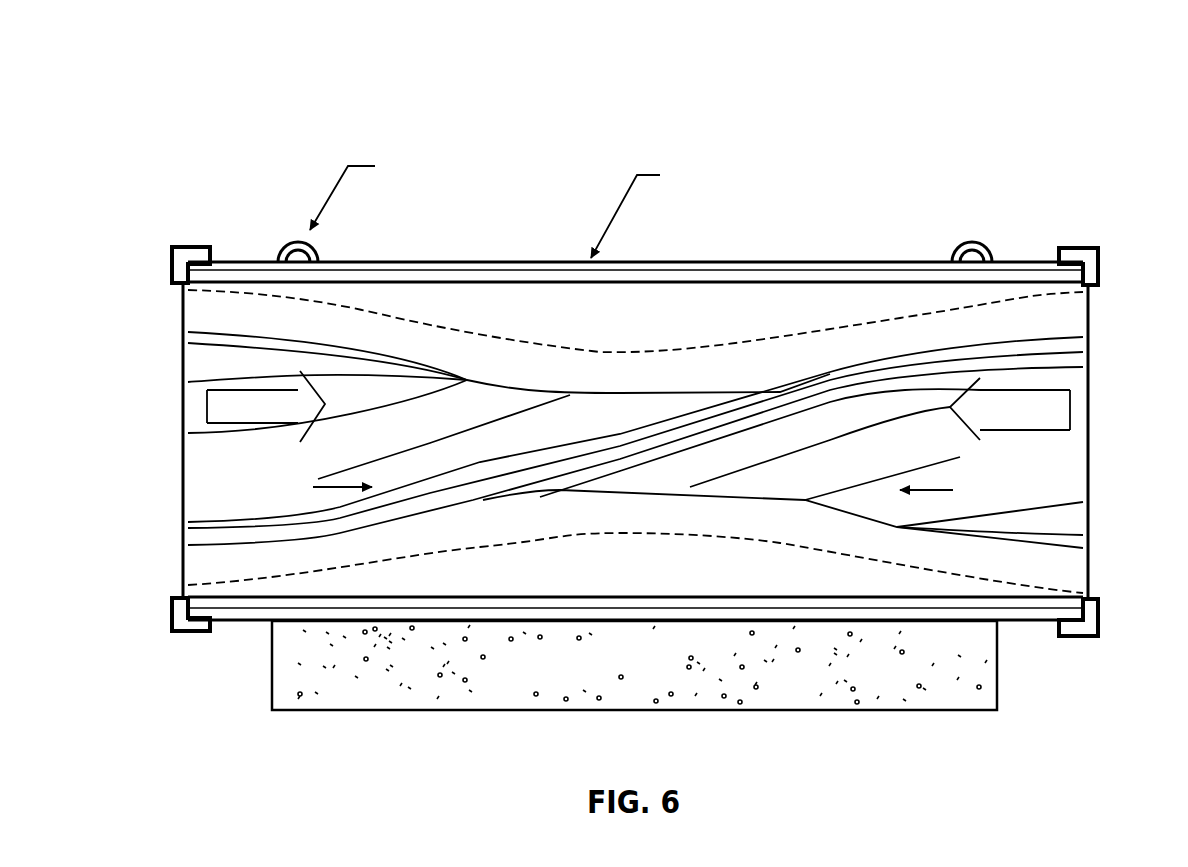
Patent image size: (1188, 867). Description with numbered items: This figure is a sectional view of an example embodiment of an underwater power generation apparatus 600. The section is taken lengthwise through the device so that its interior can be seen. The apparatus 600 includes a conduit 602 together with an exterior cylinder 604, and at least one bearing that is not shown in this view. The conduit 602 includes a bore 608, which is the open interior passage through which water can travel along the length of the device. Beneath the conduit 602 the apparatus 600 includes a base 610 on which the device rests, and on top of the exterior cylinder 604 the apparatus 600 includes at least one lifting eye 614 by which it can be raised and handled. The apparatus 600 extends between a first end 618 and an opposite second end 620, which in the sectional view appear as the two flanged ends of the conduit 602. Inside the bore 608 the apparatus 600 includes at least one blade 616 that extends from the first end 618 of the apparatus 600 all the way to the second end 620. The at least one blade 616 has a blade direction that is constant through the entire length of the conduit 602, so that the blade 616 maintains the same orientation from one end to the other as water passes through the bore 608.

The apparatus 600 is at (283, 82).
The conduit 602 is at (897, 280).
The exterior cylinder 604 is at (818, 262).
The bore 608 is at (190, 462).
The base 610 is at (292, 675).
The lifting eye 614 is at (635, 221).
The blade 616 is at (832, 437).
The first end 618 is at (140, 244).
The second end 620 is at (1132, 244).